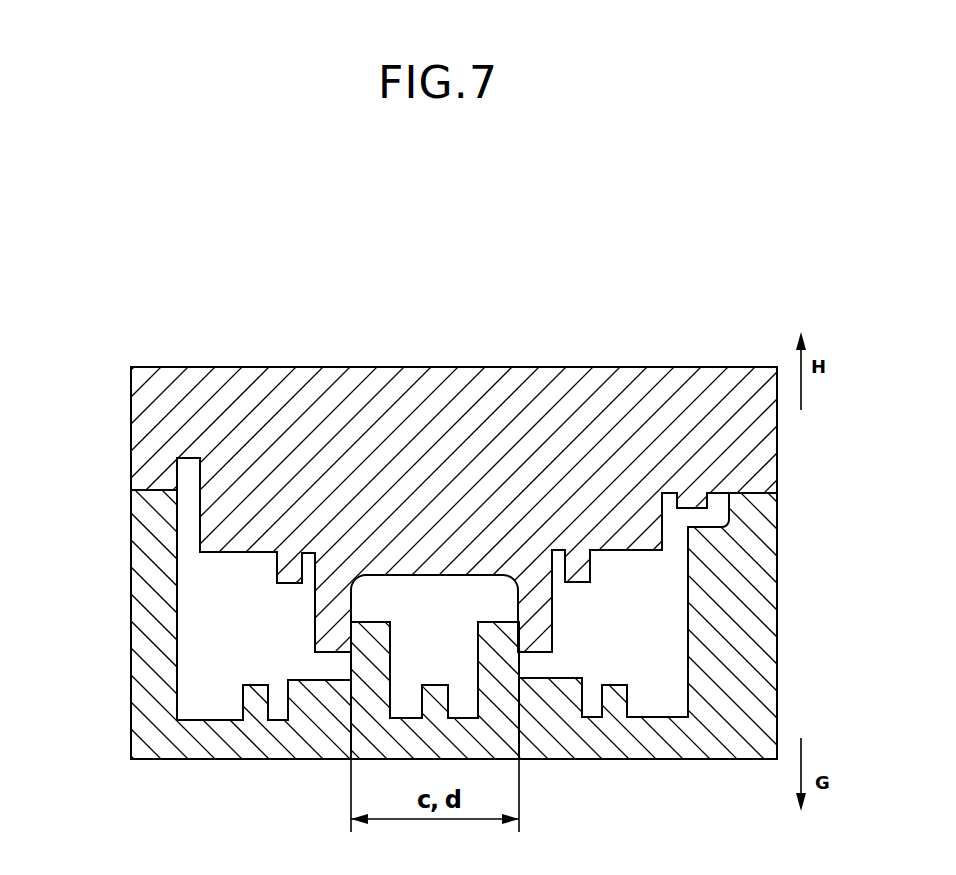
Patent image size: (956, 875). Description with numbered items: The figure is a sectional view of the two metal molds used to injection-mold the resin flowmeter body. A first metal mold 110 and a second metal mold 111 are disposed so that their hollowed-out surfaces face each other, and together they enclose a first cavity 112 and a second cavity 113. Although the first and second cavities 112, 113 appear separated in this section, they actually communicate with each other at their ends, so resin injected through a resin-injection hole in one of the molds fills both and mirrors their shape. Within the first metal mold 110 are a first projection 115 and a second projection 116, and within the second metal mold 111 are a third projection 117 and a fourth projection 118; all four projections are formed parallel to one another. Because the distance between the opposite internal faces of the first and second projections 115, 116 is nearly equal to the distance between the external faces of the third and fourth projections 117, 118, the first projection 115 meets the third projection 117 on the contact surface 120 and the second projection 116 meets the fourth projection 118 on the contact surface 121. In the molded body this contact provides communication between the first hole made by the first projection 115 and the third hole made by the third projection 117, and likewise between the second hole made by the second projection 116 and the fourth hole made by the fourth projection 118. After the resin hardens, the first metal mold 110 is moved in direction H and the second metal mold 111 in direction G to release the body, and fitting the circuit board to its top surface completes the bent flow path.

The first metal mold 110 is at (158, 408).
The second metal mold 111 is at (148, 735).
The first cavity 112 is at (208, 578).
The second cavity 113 is at (437, 668).
The first projection 115 is at (332, 601).
The second projection 116 is at (525, 600).
The third projection 117 is at (372, 640).
The fourth projection 118 is at (497, 643).
The contact surface 120 is at (350, 630).
The contact surface 121 is at (519, 638).